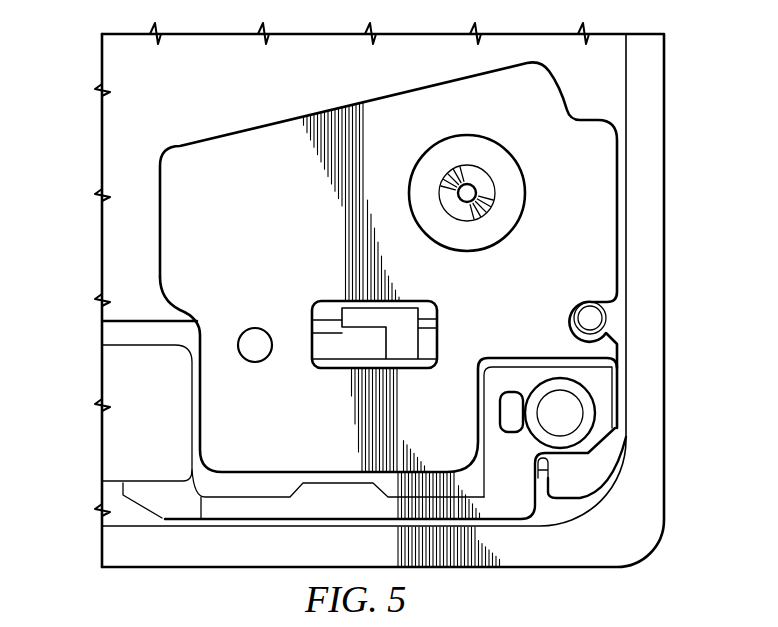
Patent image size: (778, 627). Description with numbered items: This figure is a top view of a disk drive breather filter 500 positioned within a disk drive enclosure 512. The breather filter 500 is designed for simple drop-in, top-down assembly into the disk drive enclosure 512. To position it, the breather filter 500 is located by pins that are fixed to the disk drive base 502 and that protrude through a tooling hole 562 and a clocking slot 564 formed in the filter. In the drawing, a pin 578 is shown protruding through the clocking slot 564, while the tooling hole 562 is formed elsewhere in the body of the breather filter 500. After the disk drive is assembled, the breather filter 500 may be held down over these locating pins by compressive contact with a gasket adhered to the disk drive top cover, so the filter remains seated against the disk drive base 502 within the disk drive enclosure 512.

The disk drive breather filter 500 is at (248, 129).
The disk drive base 502 is at (640, 508).
The disk drive enclosure 512 is at (125, 130).
The tooling hole 562 is at (254, 346).
The clocking slot 564 is at (574, 318).
The pin 578 is at (590, 318).